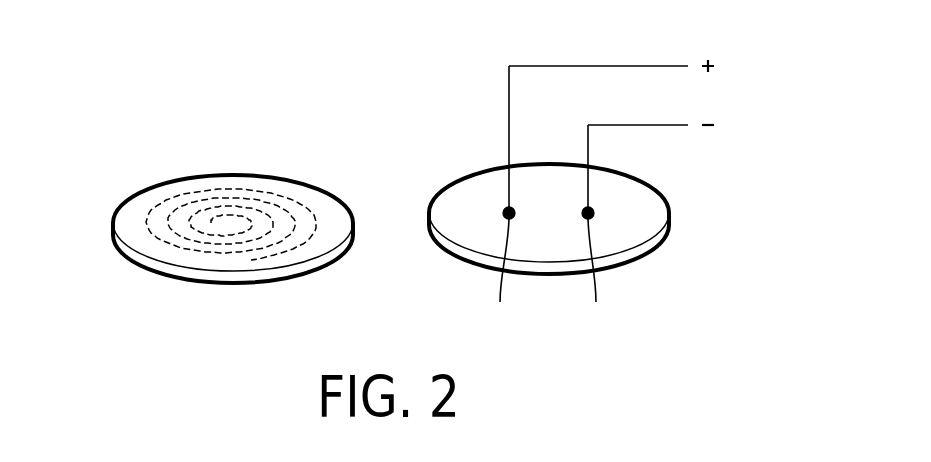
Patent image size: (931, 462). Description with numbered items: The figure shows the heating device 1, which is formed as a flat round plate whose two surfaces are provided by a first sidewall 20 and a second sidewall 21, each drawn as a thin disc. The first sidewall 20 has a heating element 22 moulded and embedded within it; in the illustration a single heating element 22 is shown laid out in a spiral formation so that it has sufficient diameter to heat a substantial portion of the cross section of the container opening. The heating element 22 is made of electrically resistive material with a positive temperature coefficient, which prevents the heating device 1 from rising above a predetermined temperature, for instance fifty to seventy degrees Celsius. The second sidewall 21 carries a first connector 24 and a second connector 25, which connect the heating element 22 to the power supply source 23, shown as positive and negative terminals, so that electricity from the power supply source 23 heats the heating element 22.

The heating device 1 is at (116, 87).
The first sidewall 20 is at (135, 212).
The second sidewall 21 is at (467, 195).
The heating element 22 is at (247, 190).
The power supply source 23 is at (731, 50).
The first connector 24 is at (501, 199).
The second connector 25 is at (596, 229).